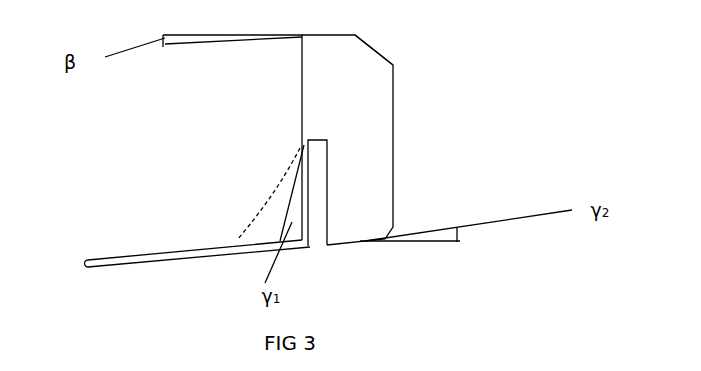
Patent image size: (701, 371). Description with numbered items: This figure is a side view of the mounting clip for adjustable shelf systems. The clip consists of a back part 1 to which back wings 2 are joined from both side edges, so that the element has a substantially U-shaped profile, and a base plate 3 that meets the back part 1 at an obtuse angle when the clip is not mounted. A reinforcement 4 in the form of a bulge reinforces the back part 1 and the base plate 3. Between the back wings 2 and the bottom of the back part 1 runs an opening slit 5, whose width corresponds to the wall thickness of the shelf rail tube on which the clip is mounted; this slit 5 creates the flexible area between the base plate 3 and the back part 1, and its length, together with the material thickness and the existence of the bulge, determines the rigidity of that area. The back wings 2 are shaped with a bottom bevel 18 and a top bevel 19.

The back part 1 is at (302, 114).
The back wings 2 is at (343, 72).
The base plate 3 is at (193, 245).
The reinforcement 4 is at (283, 215).
The opening slit 5 is at (313, 200).
The bottom bevel 18 is at (362, 242).
The top bevel 19 is at (313, 33).